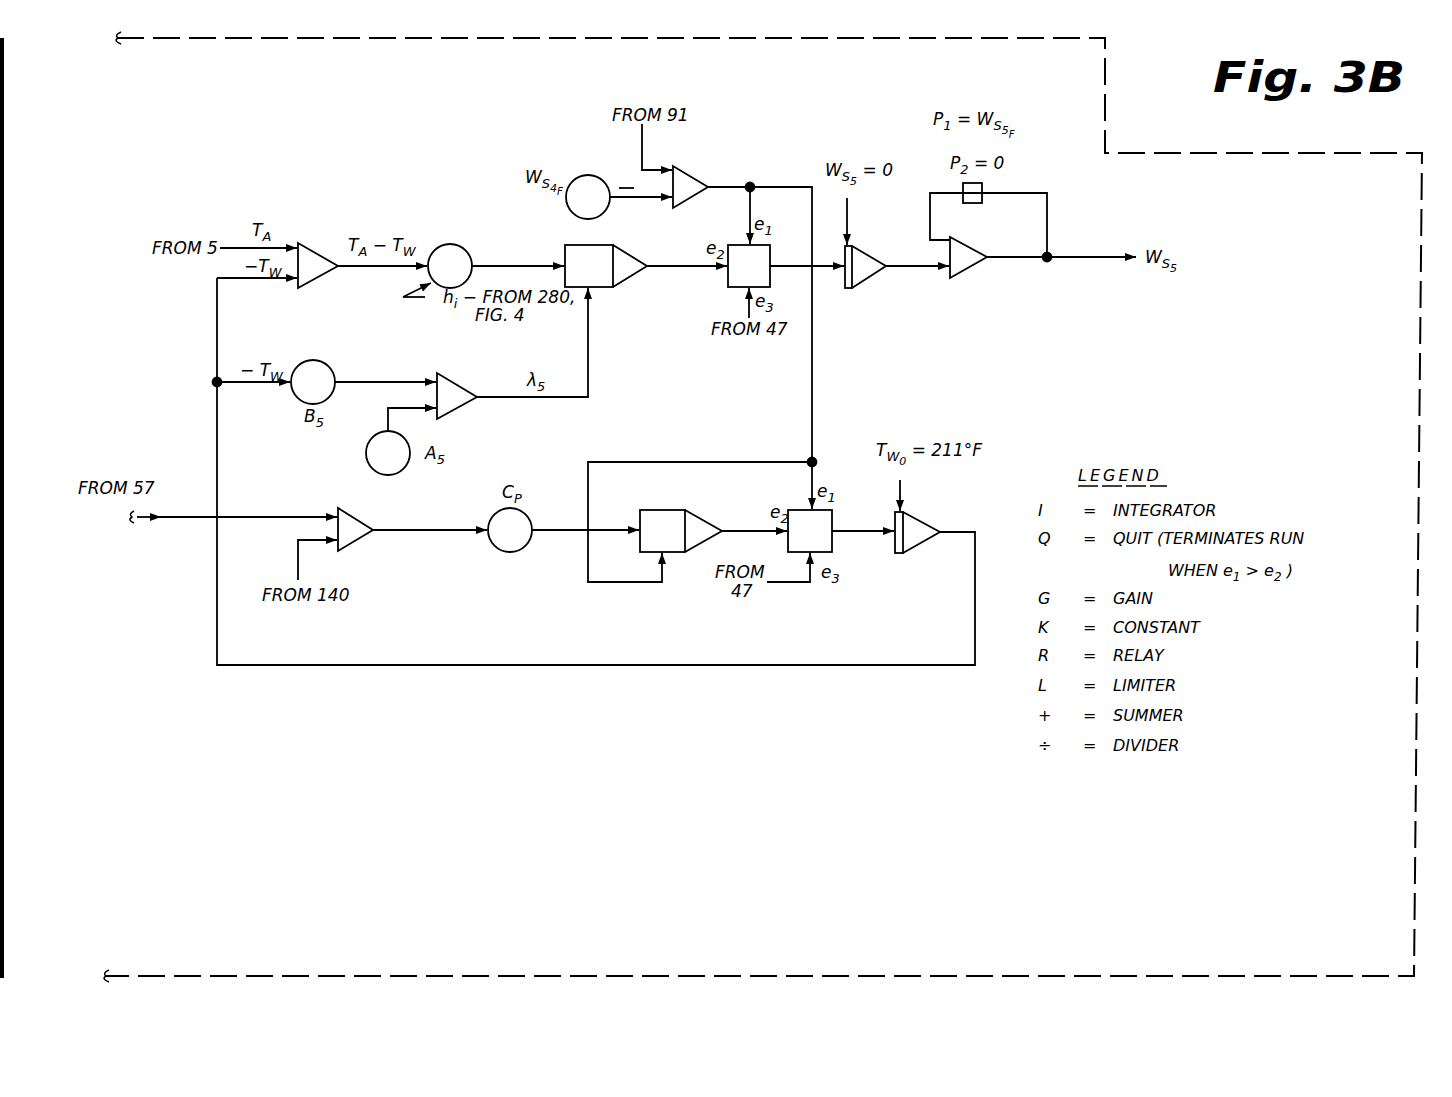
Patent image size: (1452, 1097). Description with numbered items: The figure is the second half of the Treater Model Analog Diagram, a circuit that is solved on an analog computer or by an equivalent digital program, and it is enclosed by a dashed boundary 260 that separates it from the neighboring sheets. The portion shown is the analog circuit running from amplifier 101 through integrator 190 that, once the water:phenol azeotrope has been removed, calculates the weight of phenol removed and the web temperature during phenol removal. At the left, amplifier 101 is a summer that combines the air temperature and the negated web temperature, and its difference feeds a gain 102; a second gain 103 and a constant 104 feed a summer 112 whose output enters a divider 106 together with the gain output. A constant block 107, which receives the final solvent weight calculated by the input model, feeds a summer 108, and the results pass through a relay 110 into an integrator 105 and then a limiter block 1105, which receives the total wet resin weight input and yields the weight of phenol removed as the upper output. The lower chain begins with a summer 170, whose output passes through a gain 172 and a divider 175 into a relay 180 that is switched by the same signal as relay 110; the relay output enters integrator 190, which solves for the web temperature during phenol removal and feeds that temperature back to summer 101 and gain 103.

The amplifier 101 is at (315, 243).
The gain 102 is at (454, 243).
The gain 103 is at (323, 362).
The constant 104 is at (366, 453).
The integrator 105 is at (869, 251).
The divider 106 is at (624, 281).
The block 107 is at (583, 177).
The summer 108 is at (692, 170).
The relay 110 is at (767, 245).
The summer 112 is at (457, 373).
The summer 170 is at (353, 513).
The gain 172 is at (527, 511).
The divider 175 is at (643, 508).
The relay 180 is at (788, 510).
The integrator 190 is at (920, 513).
The block 1105 is at (966, 270).
The boundary to FIG. 4 260 is at (267, 40).